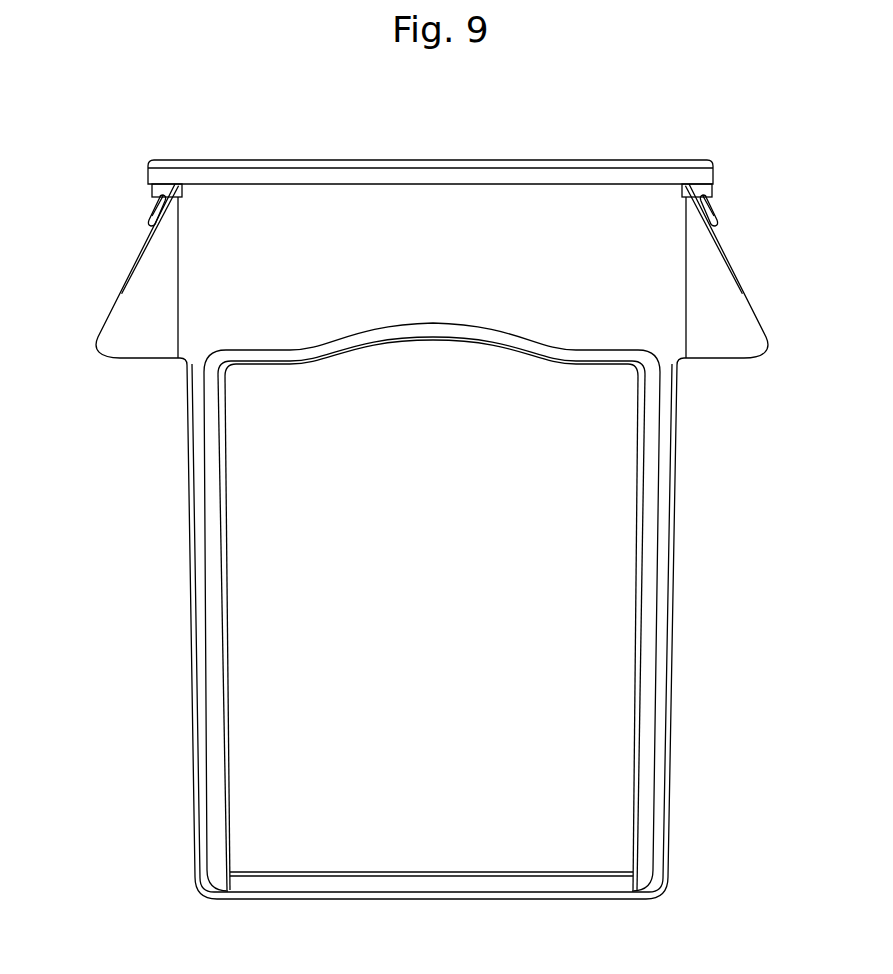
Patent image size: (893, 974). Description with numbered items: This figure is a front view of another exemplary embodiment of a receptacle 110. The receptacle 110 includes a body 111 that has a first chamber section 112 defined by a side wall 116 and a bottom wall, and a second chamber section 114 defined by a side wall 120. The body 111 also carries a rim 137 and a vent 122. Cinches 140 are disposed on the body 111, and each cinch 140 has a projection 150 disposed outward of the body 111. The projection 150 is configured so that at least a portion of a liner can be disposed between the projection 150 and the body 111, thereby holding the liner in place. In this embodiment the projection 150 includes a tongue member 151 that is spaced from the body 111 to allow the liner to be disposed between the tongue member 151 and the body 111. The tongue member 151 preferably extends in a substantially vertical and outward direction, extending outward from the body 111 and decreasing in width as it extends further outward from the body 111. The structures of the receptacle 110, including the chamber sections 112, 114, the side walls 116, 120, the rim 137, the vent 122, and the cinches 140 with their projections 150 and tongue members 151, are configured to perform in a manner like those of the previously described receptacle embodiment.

The receptacle 110 is at (420, 514).
The body 111 is at (662, 578).
The first chamber section 112 is at (400, 652).
The second chamber section 114 is at (105, 215).
The side wall 116 is at (431, 858).
The side wall 120 is at (432, 310).
The vent 122 is at (213, 680).
The rim 137 is at (521, 160).
The cinch 140 is at (735, 205).
The projection 150 is at (155, 222).
The tongue member 151 is at (158, 201).